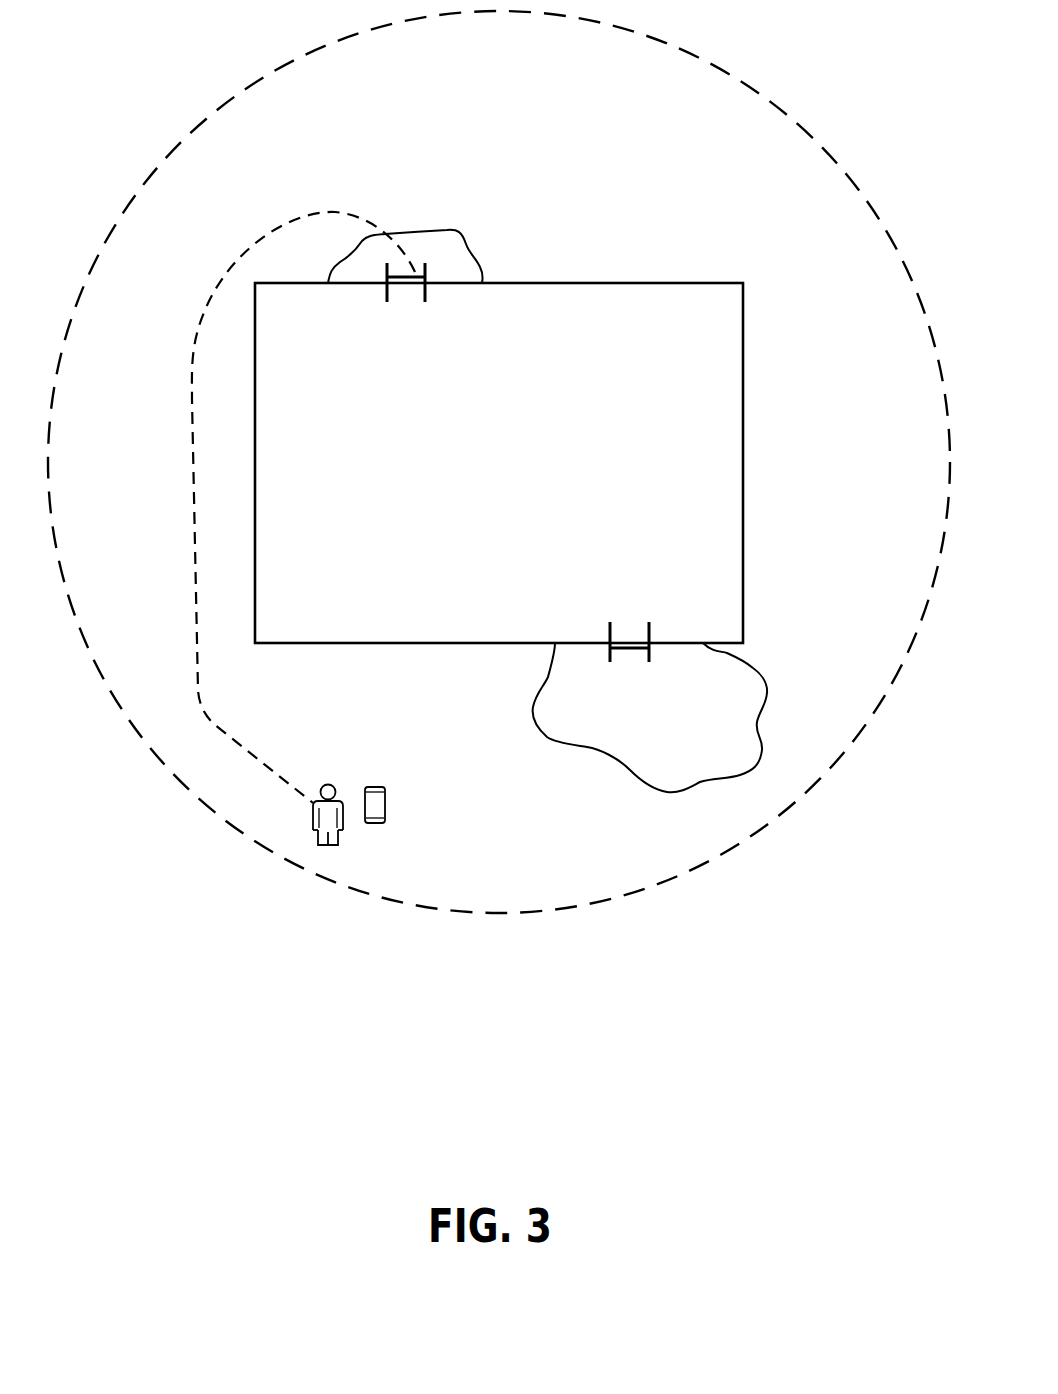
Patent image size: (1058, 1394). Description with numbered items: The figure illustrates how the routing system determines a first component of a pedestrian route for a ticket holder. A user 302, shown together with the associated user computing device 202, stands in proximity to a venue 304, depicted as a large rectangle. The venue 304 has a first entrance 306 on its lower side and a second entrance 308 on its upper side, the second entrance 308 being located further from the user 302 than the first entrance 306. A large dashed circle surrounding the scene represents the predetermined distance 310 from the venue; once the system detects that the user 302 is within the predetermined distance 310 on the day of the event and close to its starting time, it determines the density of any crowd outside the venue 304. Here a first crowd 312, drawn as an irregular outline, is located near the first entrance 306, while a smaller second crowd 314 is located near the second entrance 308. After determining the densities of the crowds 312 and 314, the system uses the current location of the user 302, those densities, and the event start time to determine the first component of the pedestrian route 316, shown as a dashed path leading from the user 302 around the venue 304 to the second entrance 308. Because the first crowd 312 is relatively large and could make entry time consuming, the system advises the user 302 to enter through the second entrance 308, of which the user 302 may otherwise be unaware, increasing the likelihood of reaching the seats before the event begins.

The user computing device 202 is at (375, 824).
The user 302 is at (328, 843).
The venue 304 is at (745, 447).
The first entrance 306 is at (637, 648).
The second entrance 308 is at (410, 277).
The predetermined distance 310 is at (768, 98).
The first crowd 312 is at (763, 682).
The second crowd 314 is at (468, 253).
The pedestrian route 316 is at (192, 397).